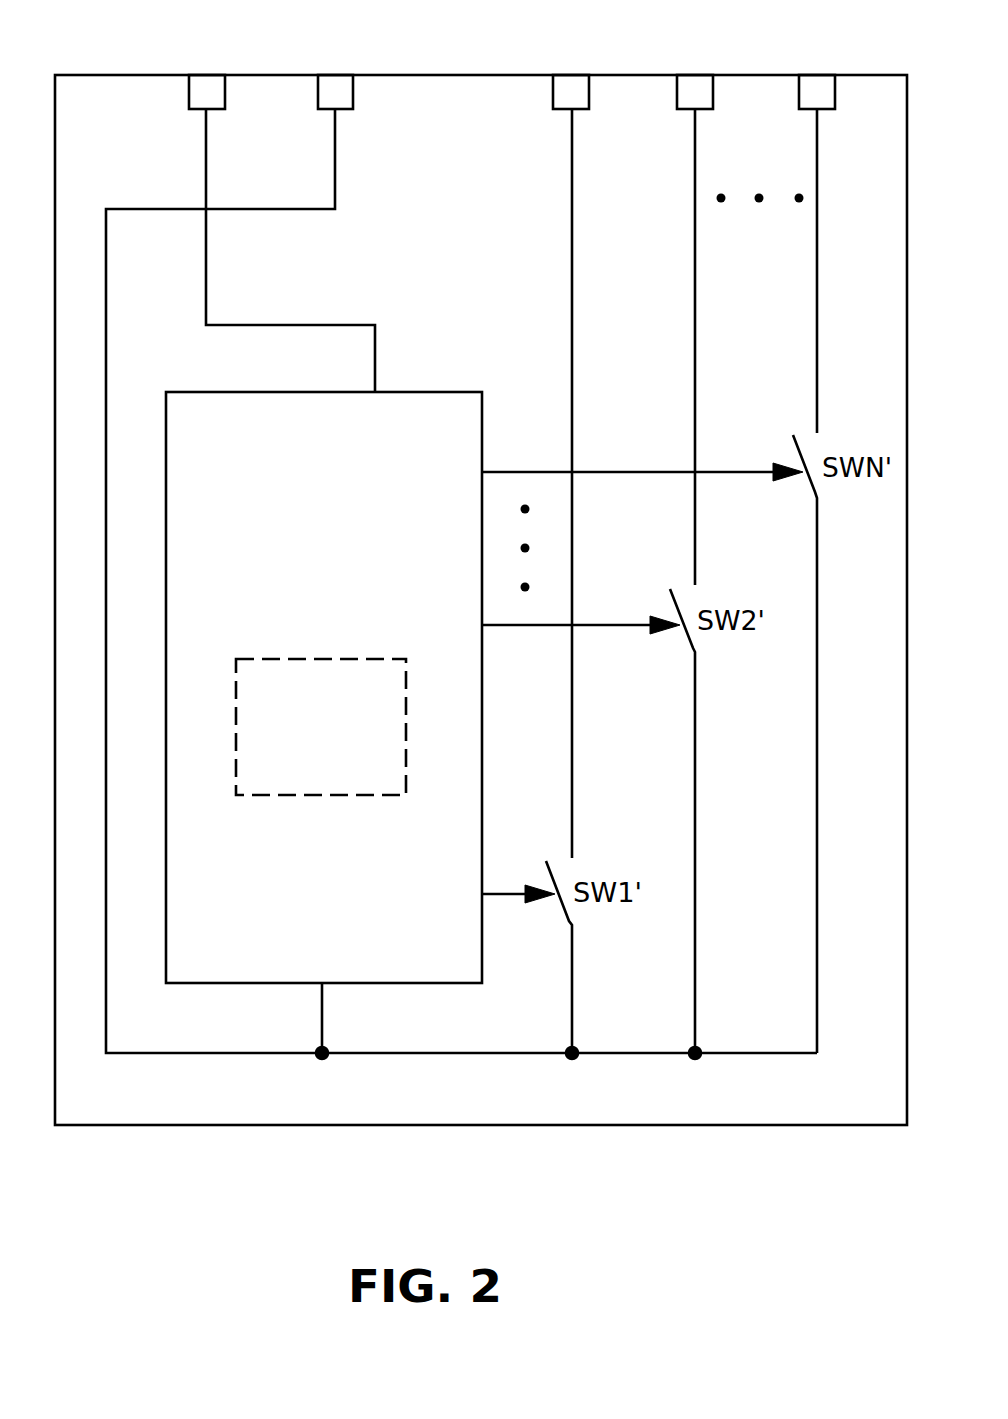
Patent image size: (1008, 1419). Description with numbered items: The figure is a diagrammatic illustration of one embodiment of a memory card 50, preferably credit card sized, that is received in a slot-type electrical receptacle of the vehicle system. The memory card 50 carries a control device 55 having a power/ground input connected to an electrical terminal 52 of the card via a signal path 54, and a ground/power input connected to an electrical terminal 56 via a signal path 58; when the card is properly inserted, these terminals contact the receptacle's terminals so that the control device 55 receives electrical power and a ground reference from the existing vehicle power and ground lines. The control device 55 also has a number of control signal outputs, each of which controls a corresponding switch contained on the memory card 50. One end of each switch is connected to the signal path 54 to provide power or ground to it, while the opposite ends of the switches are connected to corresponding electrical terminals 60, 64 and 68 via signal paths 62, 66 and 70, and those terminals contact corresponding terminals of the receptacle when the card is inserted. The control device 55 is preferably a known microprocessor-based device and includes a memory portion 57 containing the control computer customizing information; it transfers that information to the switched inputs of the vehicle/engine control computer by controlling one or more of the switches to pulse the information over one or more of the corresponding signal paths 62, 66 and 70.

The memory card 50 is at (175, 1125).
The electrical terminal 52 is at (334, 75).
The signal path 54 is at (335, 137).
The control device 55 is at (483, 413).
The electrical terminal 56 is at (206, 75).
The memory portion 57 is at (313, 795).
The signal path 58 is at (206, 130).
The electrical terminal 60 is at (571, 75).
The signal path 62 is at (572, 147).
The electrical terminal 64 is at (694, 75).
The signal path 66 is at (695, 142).
The electrical terminal 68 is at (817, 75).
The signal path 70 is at (817, 140).